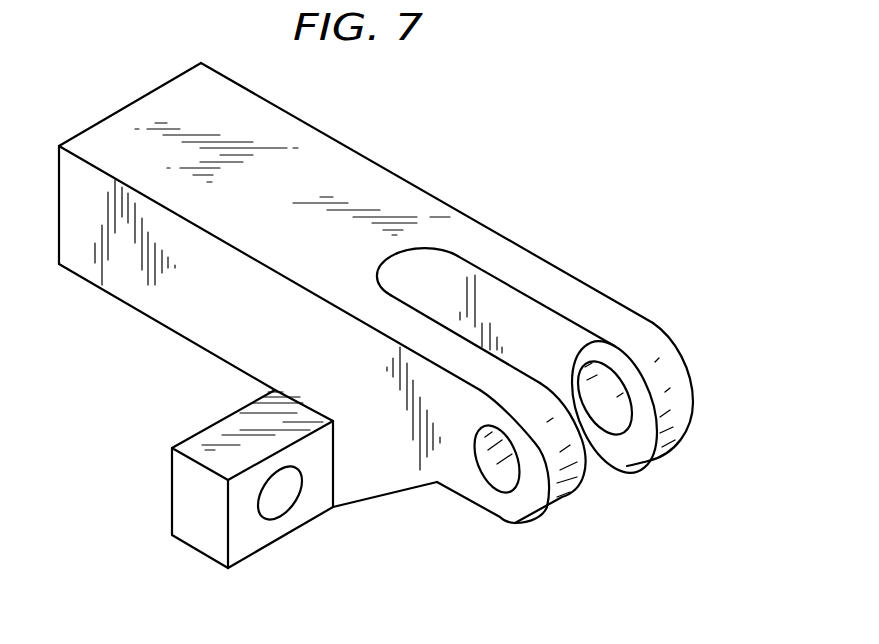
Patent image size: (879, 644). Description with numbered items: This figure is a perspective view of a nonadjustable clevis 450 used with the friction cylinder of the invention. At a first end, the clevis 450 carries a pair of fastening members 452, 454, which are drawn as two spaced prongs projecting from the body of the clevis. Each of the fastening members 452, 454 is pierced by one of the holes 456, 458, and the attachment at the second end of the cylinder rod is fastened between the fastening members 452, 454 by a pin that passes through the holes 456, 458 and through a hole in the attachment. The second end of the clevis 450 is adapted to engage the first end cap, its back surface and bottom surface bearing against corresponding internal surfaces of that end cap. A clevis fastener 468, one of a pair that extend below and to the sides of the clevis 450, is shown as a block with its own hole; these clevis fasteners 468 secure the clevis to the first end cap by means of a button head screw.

The clevis 450 is at (412, 157).
The fastening member 452 is at (522, 508).
The fastening member 454 is at (678, 425).
The hole 456 is at (490, 460).
The hole 458 is at (607, 392).
The clevis fastener 468 is at (247, 533).